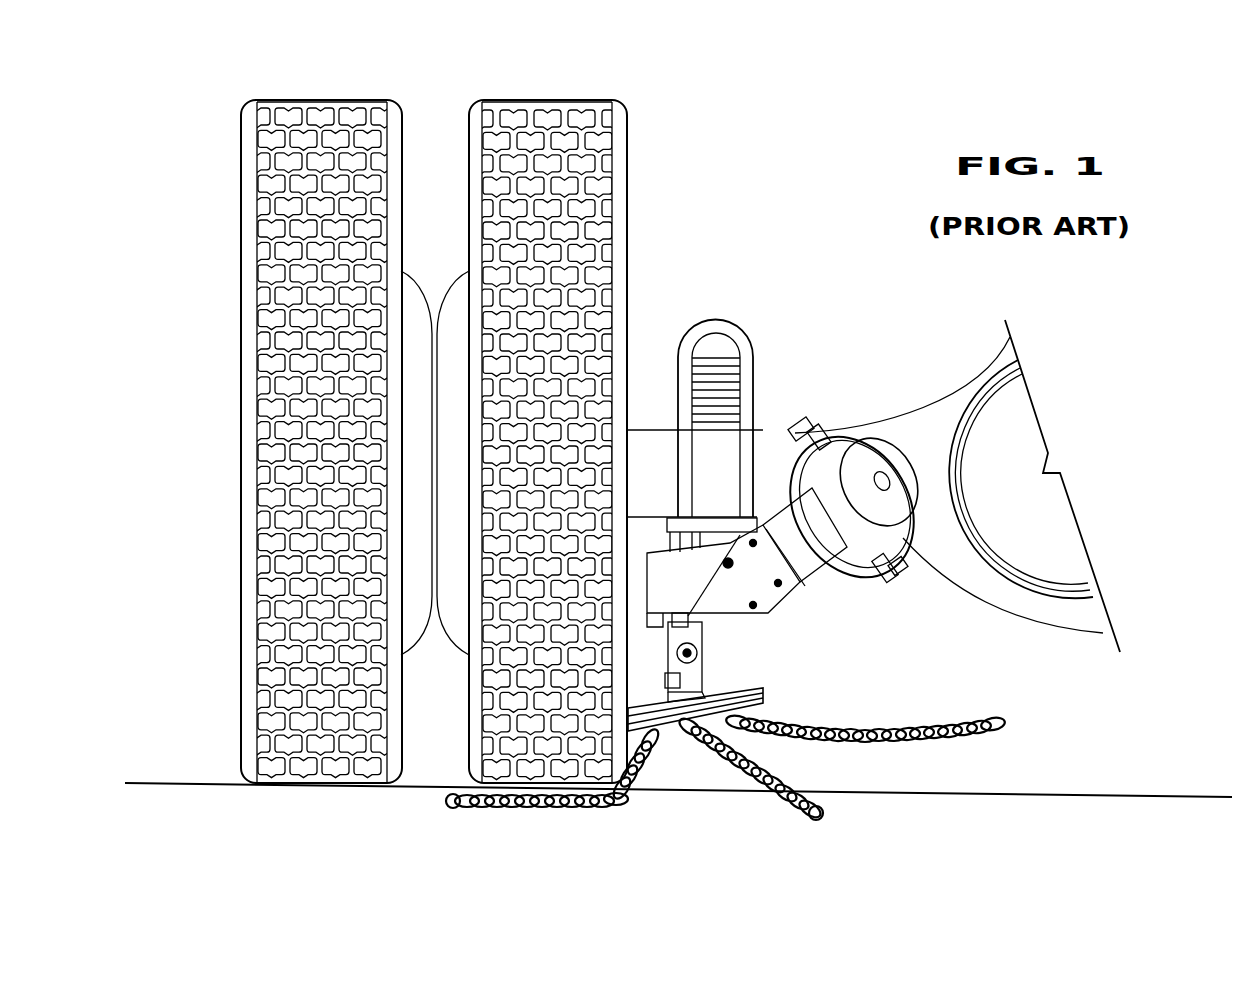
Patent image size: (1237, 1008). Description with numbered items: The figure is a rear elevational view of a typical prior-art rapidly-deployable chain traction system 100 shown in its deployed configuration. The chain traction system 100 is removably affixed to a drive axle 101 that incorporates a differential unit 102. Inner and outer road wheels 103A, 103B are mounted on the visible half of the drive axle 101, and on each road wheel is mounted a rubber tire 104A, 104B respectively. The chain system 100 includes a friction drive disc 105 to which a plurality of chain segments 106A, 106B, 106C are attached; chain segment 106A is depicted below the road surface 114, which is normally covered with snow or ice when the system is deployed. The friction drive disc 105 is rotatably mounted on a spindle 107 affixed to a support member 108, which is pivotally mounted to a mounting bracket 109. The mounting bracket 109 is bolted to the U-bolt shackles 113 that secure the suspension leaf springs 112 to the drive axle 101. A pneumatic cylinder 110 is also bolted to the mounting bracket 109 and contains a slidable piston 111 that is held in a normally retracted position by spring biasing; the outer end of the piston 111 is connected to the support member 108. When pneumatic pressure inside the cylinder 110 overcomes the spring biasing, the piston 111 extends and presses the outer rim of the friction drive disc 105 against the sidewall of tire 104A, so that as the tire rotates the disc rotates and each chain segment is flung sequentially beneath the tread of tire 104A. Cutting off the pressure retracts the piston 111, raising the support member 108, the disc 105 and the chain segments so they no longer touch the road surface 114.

The chain traction system 100 is at (1000, 697).
The drive axle 101 is at (656, 455).
The differential unit 102 is at (1007, 447).
The inner road wheel 103A is at (569, 414).
The outer road wheel 103B is at (296, 414).
The rubber tire 104A is at (562, 108).
The rubber tire 104B is at (410, 295).
The friction drive disc 105 is at (763, 695).
The chain segment 106A is at (450, 798).
The chain segment 106B is at (800, 820).
The chain segment 106C is at (933, 750).
The spindle 107 is at (690, 680).
The support member 108 is at (693, 668).
The mounting bracket 109 is at (710, 598).
The pneumatic cylinder 110 is at (830, 567).
The slidable piston 111 is at (697, 622).
The suspension leaf springs 112 is at (718, 383).
The U-bolt shackles 113 is at (747, 372).
The road surface 114 is at (195, 775).